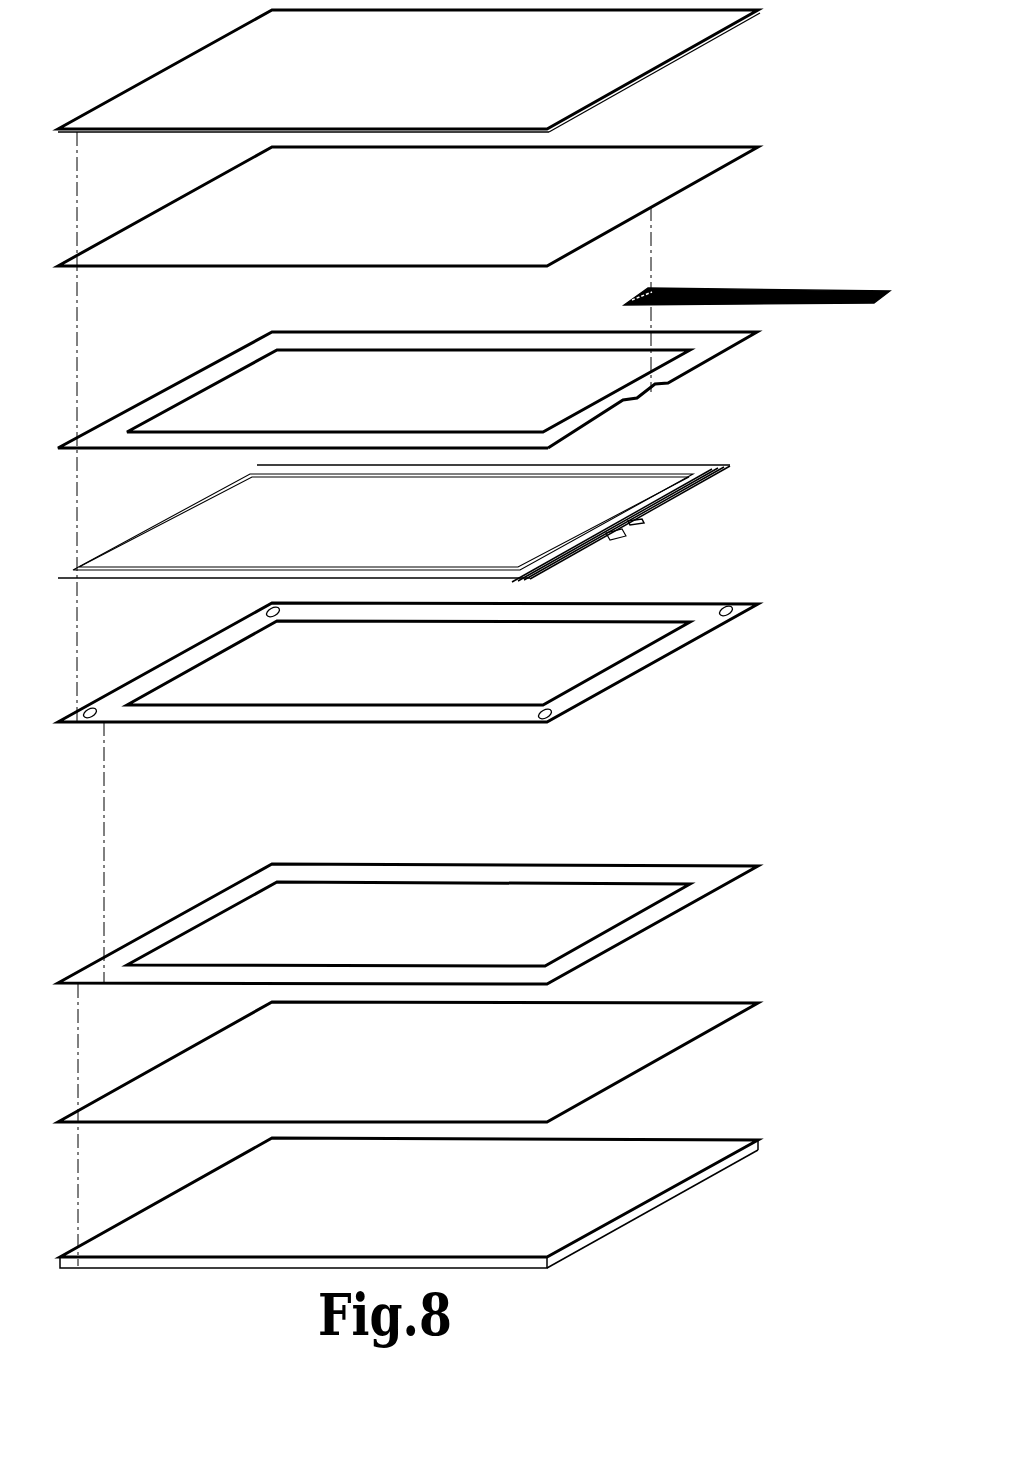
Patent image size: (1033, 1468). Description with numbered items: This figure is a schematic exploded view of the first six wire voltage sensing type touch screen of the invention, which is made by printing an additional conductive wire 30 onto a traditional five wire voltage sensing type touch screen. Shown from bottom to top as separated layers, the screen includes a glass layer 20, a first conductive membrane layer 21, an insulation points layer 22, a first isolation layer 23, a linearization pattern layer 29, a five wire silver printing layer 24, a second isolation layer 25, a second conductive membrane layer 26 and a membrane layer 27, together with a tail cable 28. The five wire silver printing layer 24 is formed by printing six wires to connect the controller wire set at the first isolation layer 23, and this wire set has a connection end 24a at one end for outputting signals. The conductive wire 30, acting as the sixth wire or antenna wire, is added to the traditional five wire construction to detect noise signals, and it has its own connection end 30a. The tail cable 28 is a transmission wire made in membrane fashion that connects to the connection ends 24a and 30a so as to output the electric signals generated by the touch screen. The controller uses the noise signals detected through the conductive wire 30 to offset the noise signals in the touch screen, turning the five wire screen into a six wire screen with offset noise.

The glass layer 20 is at (708, 1150).
The first conductive membrane layer 21 is at (720, 1000).
The insulation points layer 22 is at (720, 757).
The first isolation layer 23 is at (702, 625).
The five wire silver printing layer 24 is at (417, 493).
The connection end 24a is at (637, 520).
The second isolation layer 25 is at (710, 342).
The second conductive membrane layer 26 is at (703, 160).
The membrane layer 27 is at (700, 25).
The tail cable 28 is at (797, 278).
The linearization pattern layer 29 is at (718, 877).
The conductive wire 30 is at (390, 533).
The connection end 30a is at (613, 537).